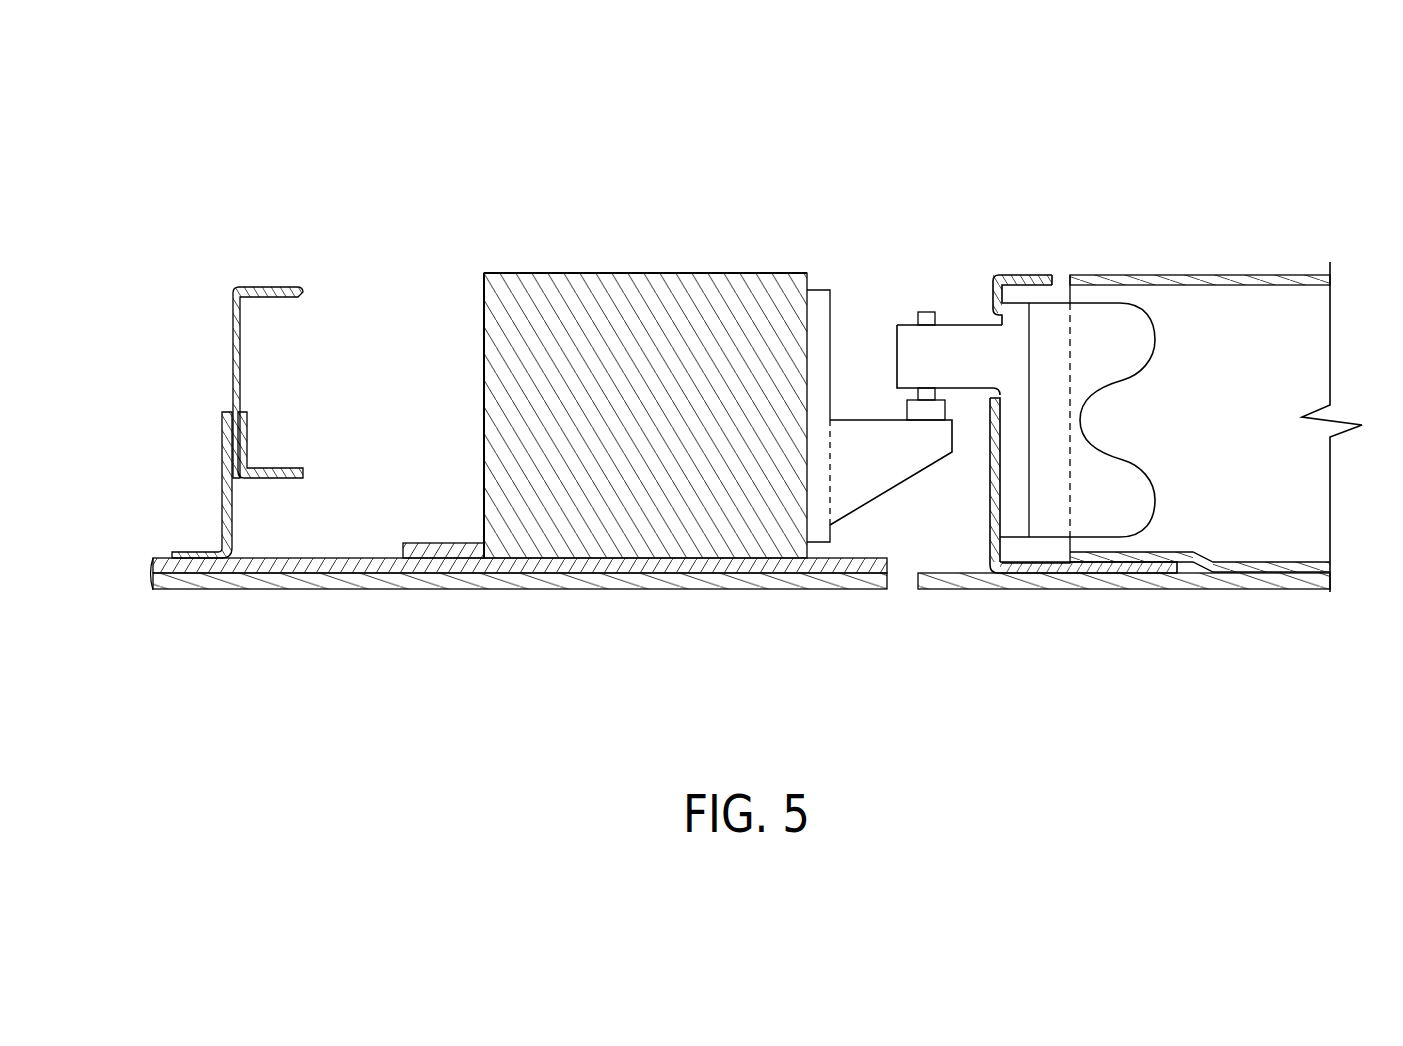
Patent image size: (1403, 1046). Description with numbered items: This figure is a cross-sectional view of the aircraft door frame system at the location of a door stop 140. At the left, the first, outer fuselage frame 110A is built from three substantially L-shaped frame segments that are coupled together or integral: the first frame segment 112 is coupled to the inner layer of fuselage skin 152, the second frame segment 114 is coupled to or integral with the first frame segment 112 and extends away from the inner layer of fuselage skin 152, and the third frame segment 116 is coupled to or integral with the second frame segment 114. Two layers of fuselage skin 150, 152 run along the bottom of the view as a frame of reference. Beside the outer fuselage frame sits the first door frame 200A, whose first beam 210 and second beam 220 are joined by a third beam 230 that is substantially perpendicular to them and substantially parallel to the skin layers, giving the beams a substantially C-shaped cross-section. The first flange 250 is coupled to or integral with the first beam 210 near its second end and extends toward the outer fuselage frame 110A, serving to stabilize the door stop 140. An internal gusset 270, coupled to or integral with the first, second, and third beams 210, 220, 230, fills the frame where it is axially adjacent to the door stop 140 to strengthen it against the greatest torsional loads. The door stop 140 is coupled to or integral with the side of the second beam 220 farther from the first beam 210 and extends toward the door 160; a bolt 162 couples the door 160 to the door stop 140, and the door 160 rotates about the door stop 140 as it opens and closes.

The first, outer fuselage frame 110A is at (264, 356).
The first frame segment 112 is at (220, 510).
The second frame segment 114 is at (240, 353).
The third frame segment 116 is at (277, 467).
The outer layer of fuselage skin 150 is at (741, 614).
The inner layer of fuselage skin 152 is at (373, 567).
The first door frame 200A is at (641, 326).
The first beam 210 is at (484, 425).
The second beam 220 is at (807, 357).
The third beam 230 is at (647, 272).
The first flange 250 is at (423, 543).
The internal gusset 270 is at (679, 422).
The door stop 140 is at (867, 472).
The door 160 is at (1002, 358).
The bolt 162 is at (927, 312).